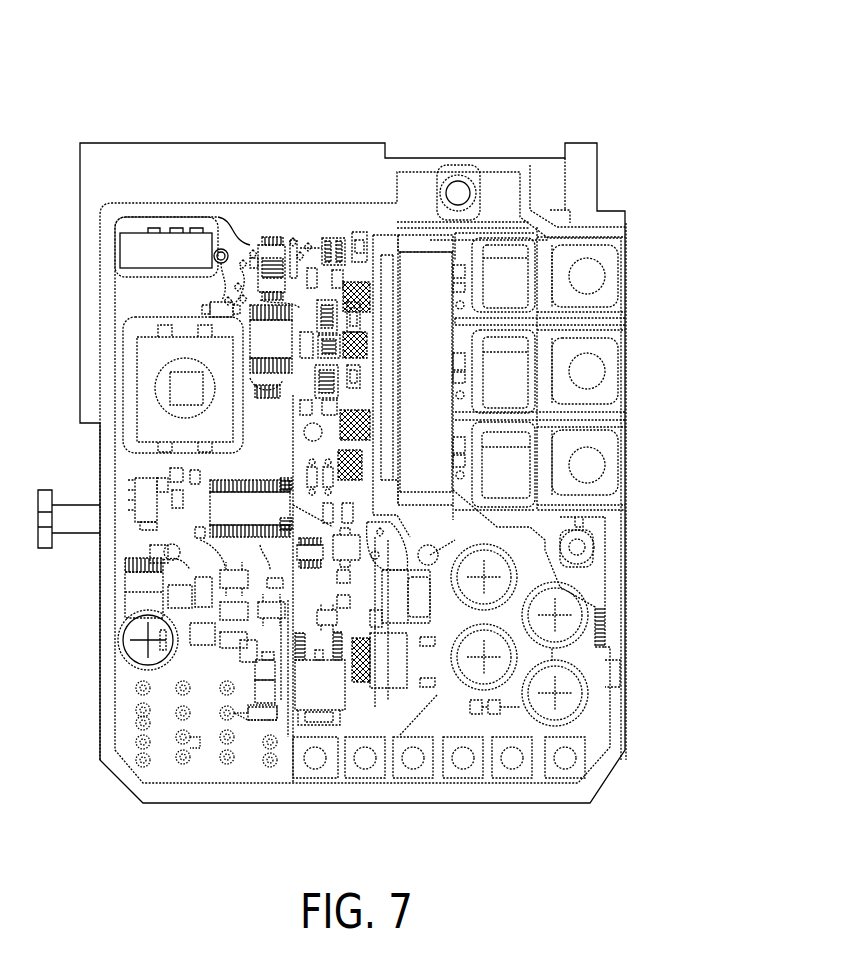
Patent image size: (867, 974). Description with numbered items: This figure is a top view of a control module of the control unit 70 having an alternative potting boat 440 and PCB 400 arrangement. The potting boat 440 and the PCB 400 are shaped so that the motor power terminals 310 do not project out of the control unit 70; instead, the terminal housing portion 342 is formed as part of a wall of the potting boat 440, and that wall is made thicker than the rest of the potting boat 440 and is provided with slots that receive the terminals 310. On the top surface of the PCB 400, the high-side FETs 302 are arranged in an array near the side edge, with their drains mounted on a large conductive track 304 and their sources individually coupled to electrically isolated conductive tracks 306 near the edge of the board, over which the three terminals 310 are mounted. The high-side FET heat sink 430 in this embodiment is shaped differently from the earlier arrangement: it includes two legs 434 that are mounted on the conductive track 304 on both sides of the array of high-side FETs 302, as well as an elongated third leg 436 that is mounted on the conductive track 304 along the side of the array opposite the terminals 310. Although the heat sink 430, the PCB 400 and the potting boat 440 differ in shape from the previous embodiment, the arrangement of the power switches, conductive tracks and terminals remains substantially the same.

The control unit 70 is at (46, 66).
The PCB 400 is at (236, 243).
The elongated third leg 436 is at (382, 288).
The legs 434 is at (412, 246).
The high-side FET heat sink 430 is at (419, 290).
The high-side FETs 302 is at (465, 272).
The conductive tracks 306 is at (508, 237).
The terminal housing portion 342 is at (640, 229).
The motor power terminals 310 is at (610, 282).
The conductive track 304 is at (523, 583).
The potting boat 440 is at (613, 752).